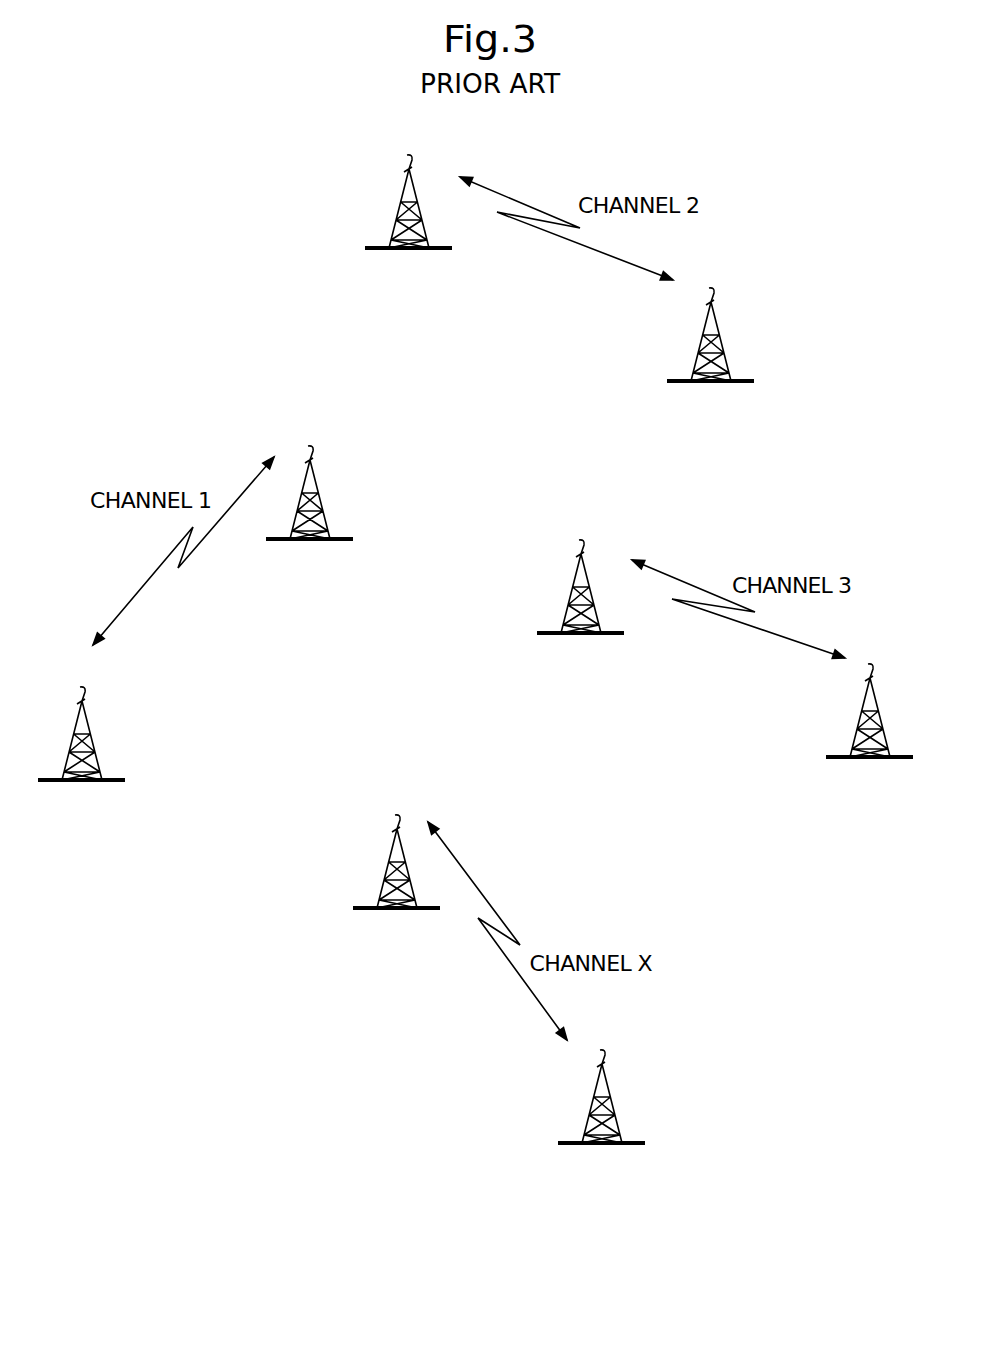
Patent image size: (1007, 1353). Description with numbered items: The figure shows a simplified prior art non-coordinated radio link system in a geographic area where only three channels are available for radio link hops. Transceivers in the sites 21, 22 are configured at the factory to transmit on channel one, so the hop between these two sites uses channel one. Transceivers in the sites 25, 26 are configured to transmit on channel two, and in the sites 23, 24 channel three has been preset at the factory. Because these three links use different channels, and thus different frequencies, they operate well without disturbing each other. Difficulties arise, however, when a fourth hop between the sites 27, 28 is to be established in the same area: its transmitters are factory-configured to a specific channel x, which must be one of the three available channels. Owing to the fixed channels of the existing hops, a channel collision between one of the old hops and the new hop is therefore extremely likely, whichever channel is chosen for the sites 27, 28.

The site 21 is at (305, 543).
The site 22 is at (85, 784).
The site 23 is at (843, 761).
The site 24 is at (588, 637).
The site 25 is at (678, 385).
The site 26 is at (410, 252).
The site 27 is at (606, 1147).
The site 28 is at (365, 912).